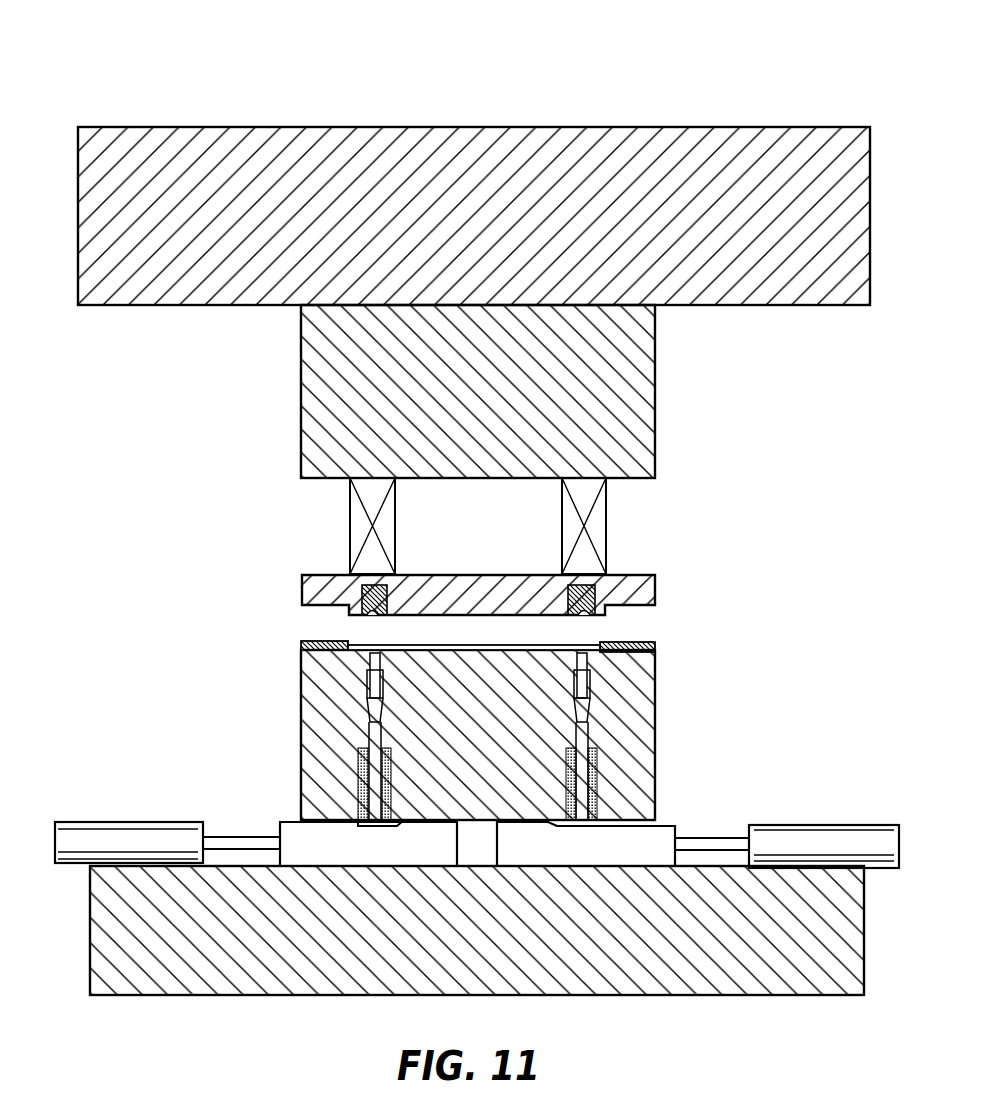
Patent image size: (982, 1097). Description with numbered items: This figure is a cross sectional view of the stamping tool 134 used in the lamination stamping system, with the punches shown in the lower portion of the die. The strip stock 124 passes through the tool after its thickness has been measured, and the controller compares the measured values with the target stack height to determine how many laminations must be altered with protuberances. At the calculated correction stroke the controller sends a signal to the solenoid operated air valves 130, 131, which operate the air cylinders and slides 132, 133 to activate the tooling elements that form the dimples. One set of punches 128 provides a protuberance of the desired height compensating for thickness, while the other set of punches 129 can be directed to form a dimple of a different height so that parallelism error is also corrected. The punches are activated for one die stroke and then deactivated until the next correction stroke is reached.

The stamping tool 134 is at (773, 88).
The strip stock 124 is at (603, 642).
The set of punches 128 is at (372, 660).
The set of punches 129 is at (583, 678).
The solenoid operated air valve 130 is at (105, 838).
The solenoid operated air valve 131 is at (848, 842).
The air cylinder and slide 132 is at (286, 828).
The air cylinder and slide 133 is at (663, 832).